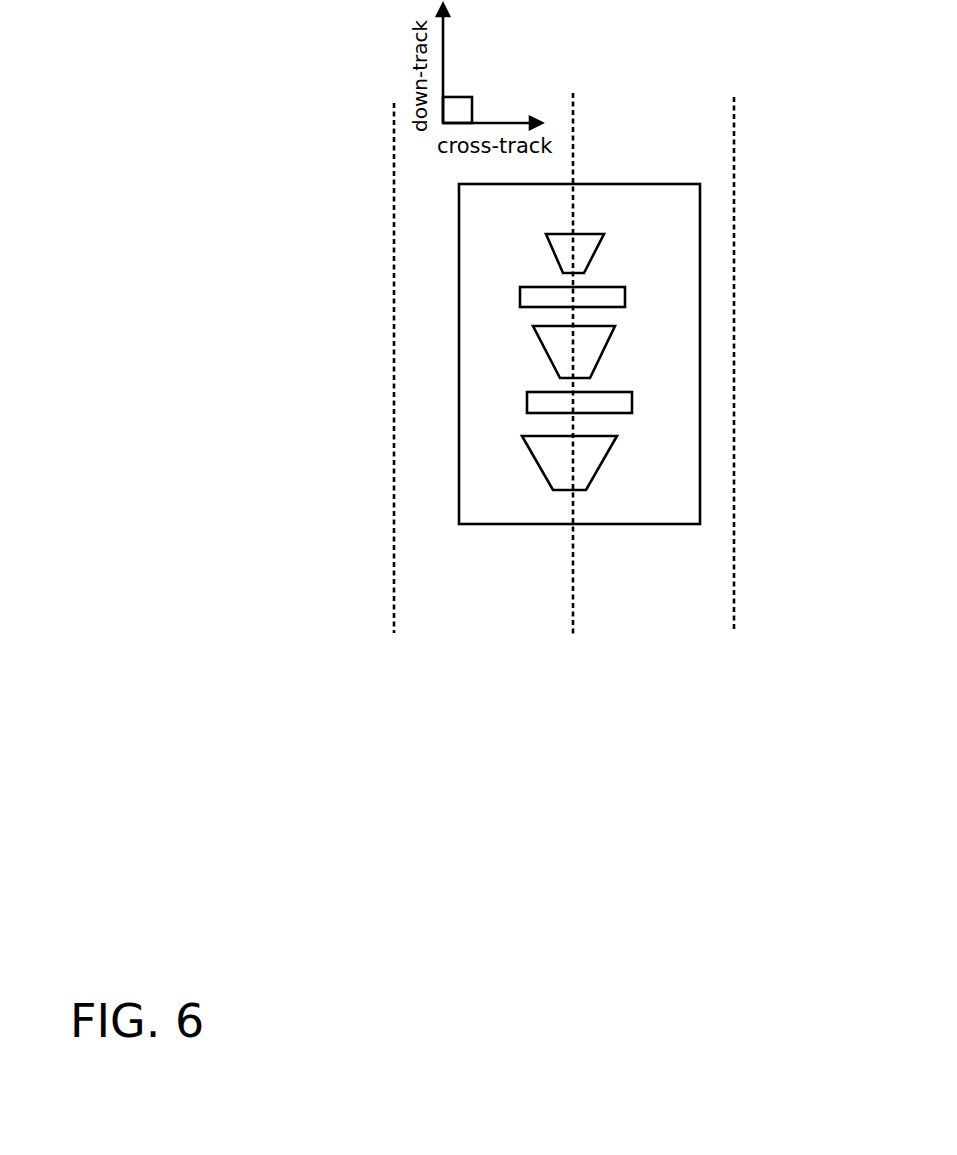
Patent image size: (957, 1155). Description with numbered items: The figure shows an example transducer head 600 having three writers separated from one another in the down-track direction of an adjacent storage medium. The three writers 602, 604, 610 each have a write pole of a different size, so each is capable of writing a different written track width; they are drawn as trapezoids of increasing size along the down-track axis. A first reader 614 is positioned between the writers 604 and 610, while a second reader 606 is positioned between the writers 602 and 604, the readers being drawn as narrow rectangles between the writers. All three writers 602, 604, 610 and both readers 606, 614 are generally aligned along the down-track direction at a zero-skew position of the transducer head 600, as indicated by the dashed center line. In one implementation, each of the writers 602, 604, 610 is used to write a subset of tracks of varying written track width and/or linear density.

The transducer head 600 is at (540, 222).
The writer 602 is at (602, 467).
The writer 604 is at (603, 347).
The second reader 606 is at (632, 405).
The writer 610 is at (593, 257).
The first reader 614 is at (520, 298).